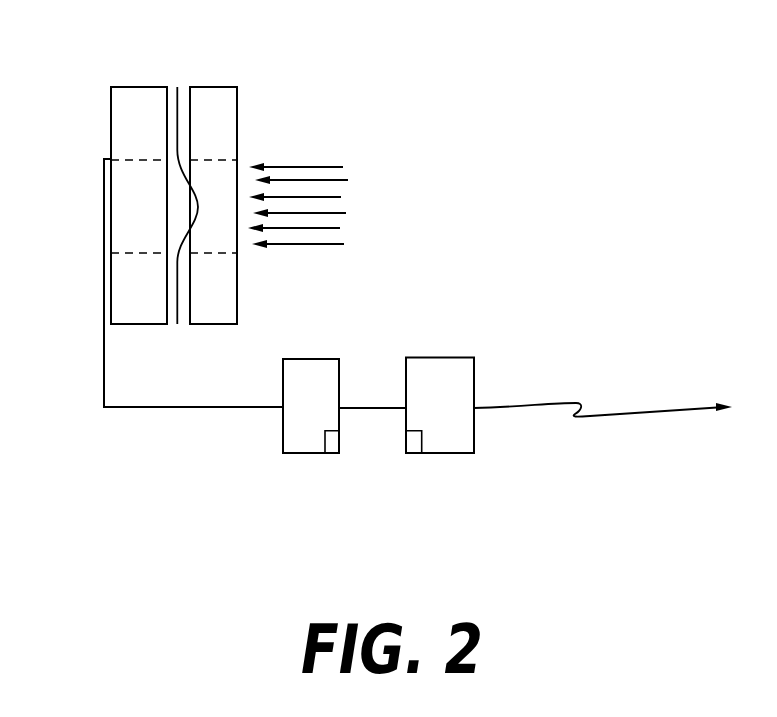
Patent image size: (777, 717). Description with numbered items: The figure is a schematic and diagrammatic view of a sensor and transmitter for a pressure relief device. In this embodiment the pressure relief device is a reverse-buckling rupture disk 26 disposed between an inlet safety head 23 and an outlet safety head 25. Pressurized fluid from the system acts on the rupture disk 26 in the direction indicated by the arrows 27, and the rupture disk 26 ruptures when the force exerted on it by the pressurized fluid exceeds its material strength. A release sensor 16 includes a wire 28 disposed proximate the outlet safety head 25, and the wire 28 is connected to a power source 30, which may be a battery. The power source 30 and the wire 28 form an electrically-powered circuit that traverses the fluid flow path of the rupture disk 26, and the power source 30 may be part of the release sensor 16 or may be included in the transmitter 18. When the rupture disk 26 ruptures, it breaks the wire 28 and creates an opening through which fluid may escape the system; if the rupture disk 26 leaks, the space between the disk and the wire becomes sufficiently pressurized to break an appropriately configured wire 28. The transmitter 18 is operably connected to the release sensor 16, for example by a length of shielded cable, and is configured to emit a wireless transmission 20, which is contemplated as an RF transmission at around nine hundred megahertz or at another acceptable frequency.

The release sensor 16 is at (325, 417).
The transmitter 18 is at (425, 420).
The wireless transmission 20 is at (528, 403).
The inlet safety head 23 is at (218, 103).
The outlet safety head 25 is at (139, 115).
The reverse-buckling rupture disk 26 is at (177, 87).
The arrows 27 is at (336, 145).
The wire 28 is at (103, 198).
The power source 30 is at (410, 448).